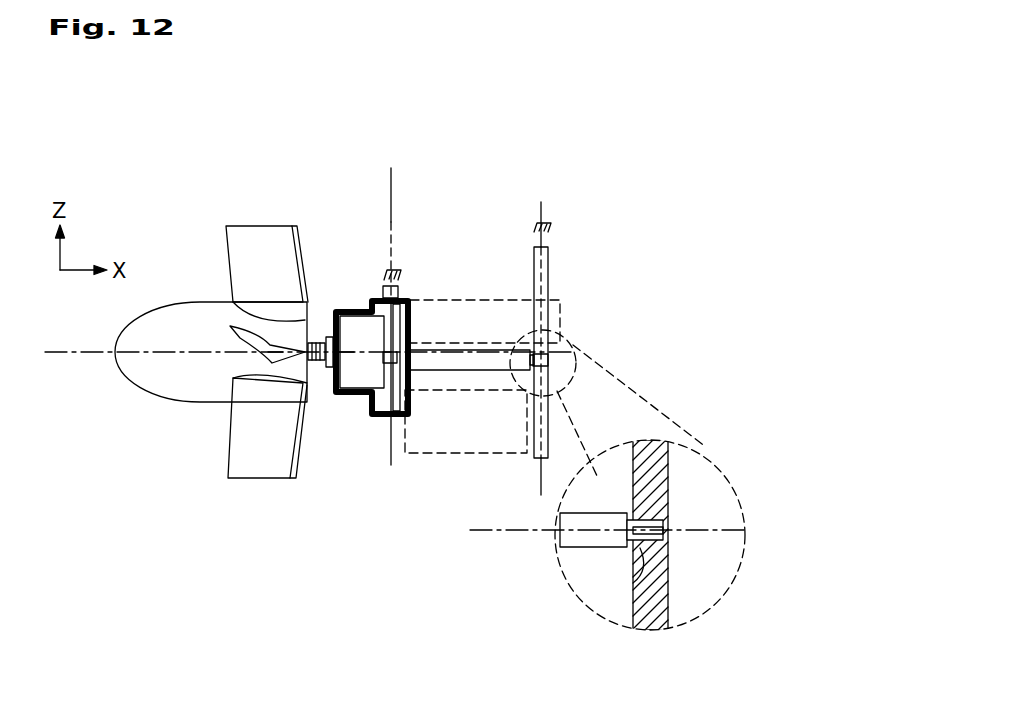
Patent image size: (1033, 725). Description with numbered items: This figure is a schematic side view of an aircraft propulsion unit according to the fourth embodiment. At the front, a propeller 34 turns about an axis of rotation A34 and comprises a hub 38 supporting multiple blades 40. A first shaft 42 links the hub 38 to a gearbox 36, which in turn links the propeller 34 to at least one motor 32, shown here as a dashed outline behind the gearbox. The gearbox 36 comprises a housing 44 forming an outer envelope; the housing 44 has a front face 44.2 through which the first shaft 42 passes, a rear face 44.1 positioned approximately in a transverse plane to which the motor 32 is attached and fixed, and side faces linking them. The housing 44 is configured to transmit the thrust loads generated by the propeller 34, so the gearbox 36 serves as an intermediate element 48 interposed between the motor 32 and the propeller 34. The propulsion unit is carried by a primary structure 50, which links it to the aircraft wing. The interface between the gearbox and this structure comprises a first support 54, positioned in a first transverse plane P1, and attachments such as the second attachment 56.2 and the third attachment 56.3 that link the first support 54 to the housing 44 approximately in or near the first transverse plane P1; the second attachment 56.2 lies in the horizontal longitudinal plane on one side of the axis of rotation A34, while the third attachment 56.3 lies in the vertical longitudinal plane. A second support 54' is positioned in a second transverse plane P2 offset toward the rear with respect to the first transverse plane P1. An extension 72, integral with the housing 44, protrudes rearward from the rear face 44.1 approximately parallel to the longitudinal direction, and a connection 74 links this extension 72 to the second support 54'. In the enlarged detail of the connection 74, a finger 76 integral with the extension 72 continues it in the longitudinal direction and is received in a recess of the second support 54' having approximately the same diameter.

The motor 32 is at (501, 295).
The propeller 34 is at (138, 404).
The axis of rotation A34 is at (62, 355).
The gearbox 36 is at (340, 395).
The hub 38 is at (200, 330).
The blades 40 is at (262, 253).
The first shaft 42 is at (320, 340).
The housing 44 is at (346, 300).
The rear face 44.1 is at (413, 382).
The front face 44.2 is at (330, 372).
The intermediate element 48 is at (377, 377).
The primary structure 50 is at (403, 245).
The first support 54 is at (417, 322).
The second support 54' is at (658, 443).
The second attachment 56.2 is at (378, 415).
The third attachment 56.3 is at (378, 275).
The extension 72 is at (483, 372).
The connection 74 is at (585, 327).
The finger 76 is at (633, 583).
The first transverse plane P1 is at (395, 221).
The second transverse plane P2 is at (548, 226).